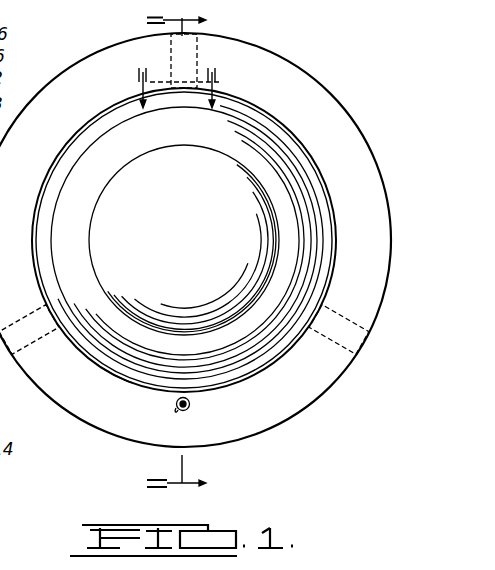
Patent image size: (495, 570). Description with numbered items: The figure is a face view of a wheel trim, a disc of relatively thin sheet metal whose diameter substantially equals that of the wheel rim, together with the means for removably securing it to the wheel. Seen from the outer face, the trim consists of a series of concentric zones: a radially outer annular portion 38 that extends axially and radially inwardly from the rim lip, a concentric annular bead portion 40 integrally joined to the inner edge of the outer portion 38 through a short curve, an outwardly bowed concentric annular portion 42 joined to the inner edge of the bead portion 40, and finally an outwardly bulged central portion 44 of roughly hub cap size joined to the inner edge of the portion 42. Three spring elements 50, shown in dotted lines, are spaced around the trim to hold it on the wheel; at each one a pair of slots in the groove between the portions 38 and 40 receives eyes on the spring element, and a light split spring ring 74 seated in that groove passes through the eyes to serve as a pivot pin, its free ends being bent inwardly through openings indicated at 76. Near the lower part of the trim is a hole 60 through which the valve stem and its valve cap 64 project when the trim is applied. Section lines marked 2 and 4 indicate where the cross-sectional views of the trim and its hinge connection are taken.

The section line 2- 2 is at (186, 253).
The section line 4- 4 is at (171, 88).
The radially outer annular portion 38 is at (305, 87).
The annular bead portion 40 is at (270, 124).
The outwardly bowed annular portion 42 is at (290, 222).
The central portion 44 is at (200, 216).
The spring elements 50 is at (197, 53).
The hole 60 is at (190, 405).
The valve cap 64 is at (178, 409).
The split spring ring 74 is at (117, 378).
The openings for ring ends 76 is at (323, 182).